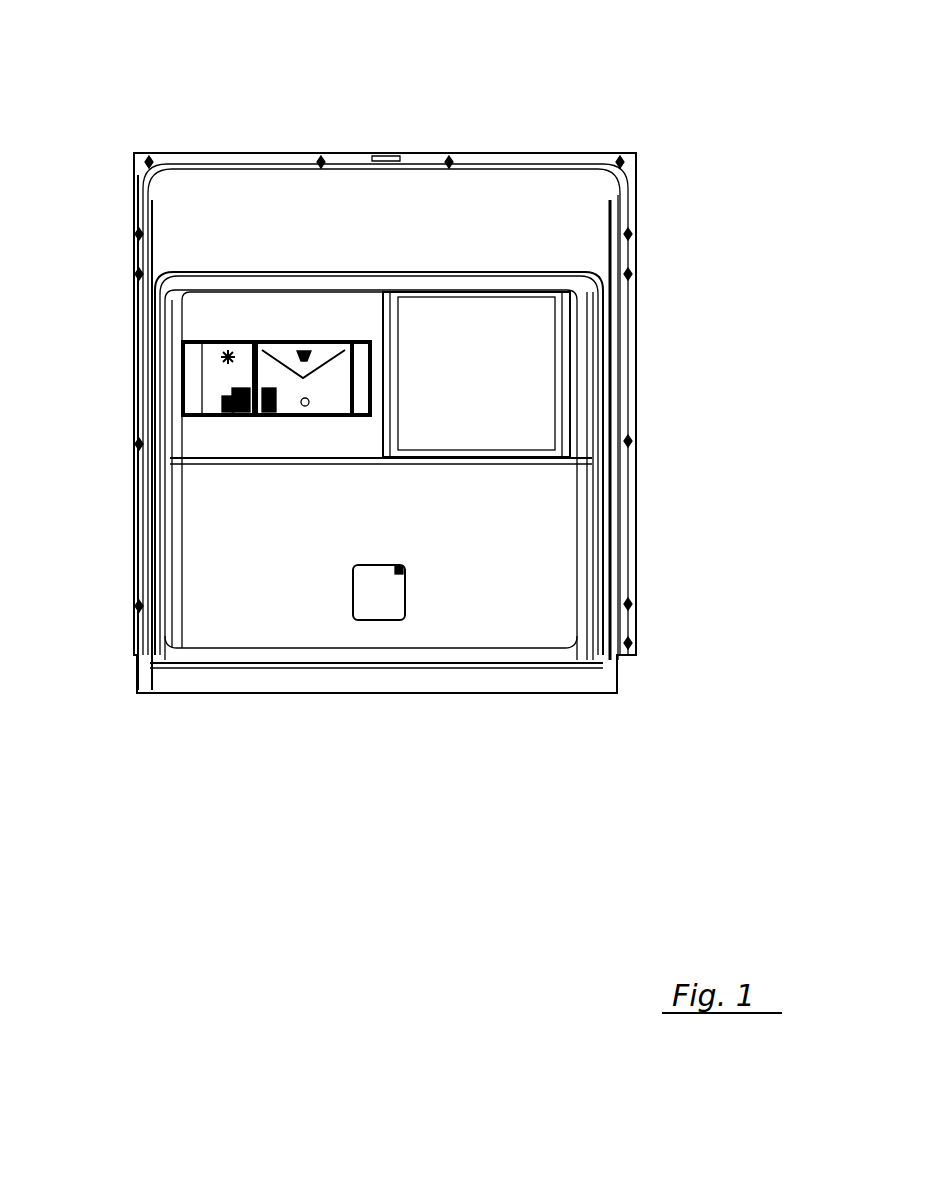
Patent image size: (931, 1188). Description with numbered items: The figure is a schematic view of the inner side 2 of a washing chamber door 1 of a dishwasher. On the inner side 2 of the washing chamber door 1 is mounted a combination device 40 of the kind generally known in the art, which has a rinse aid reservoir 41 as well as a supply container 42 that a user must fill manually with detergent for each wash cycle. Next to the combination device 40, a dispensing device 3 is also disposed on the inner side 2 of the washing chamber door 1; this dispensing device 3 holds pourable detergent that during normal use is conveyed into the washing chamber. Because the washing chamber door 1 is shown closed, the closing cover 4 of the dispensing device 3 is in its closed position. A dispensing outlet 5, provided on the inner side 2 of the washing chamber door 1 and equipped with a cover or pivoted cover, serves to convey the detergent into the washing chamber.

The washing chamber door 1 is at (680, 247).
The inner side 2 is at (490, 232).
The dispensing device 3 is at (512, 377).
The closing cover 4 is at (500, 413).
The dispensing outlet 5 is at (380, 600).
The combination device 40 is at (270, 330).
The rinse aid reservoir 41 is at (218, 377).
The supply container 42 is at (287, 392).